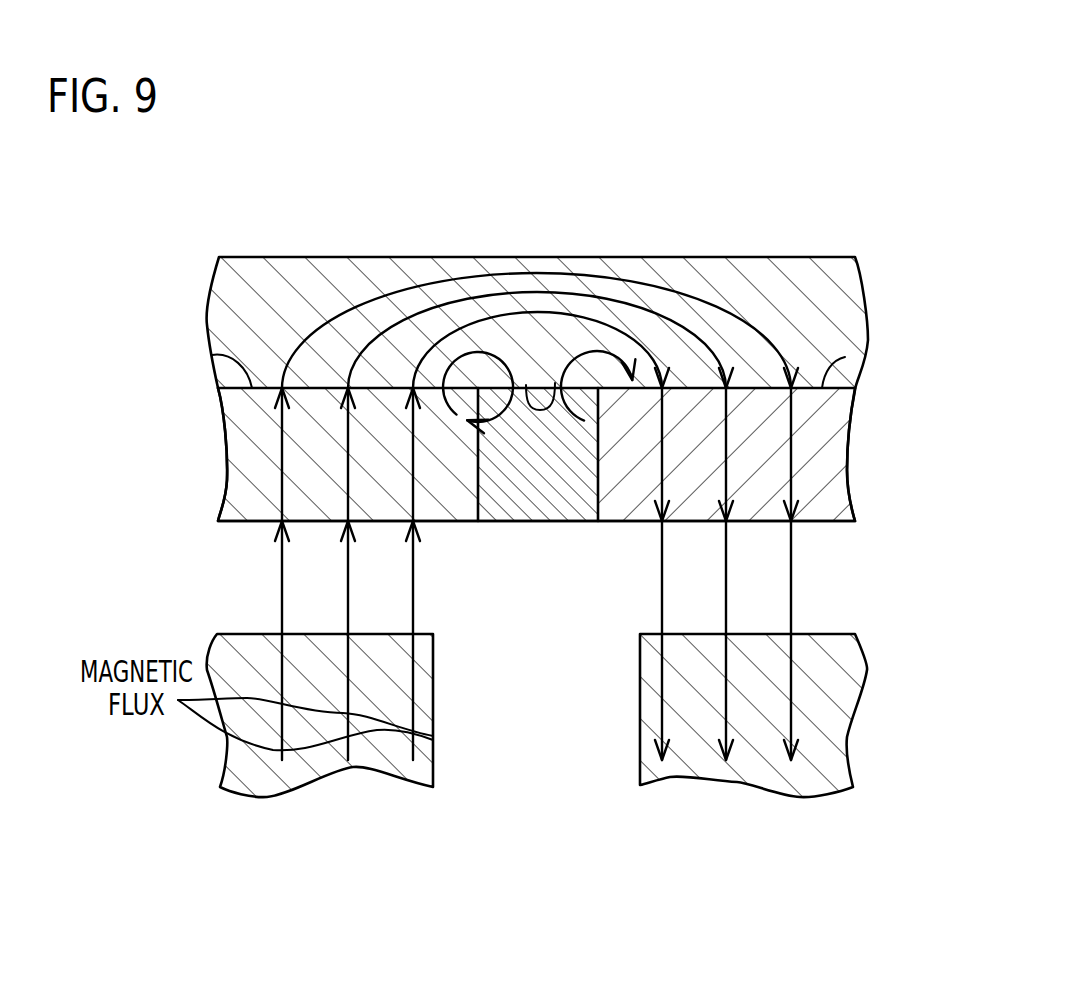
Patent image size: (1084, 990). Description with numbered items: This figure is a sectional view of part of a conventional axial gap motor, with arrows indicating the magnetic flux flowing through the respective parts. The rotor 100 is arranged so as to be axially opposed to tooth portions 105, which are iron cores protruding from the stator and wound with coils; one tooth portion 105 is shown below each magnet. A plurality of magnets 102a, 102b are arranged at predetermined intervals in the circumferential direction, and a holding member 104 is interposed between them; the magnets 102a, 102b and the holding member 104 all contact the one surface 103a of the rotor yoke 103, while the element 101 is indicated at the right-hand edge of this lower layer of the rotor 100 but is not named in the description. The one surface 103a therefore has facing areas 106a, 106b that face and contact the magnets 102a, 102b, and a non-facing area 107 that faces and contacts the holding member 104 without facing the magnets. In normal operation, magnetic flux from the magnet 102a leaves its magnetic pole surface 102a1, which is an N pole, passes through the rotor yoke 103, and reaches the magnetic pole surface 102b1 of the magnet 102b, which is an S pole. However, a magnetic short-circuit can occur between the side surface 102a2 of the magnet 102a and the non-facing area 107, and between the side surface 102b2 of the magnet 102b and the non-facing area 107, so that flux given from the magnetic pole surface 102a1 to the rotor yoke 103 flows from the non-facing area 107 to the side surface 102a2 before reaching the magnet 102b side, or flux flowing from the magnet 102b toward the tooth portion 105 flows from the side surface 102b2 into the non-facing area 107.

The rotor 100 is at (798, 230).
The base member 101 is at (852, 490).
The magnet 102a is at (257, 524).
The magnet 102b is at (820, 525).
The magnetic pole surface 102a1 is at (212, 355).
The magnetic pole surface 102b1 is at (845, 357).
The side surface 102a2 is at (478, 485).
The side surface 102b2 is at (597, 485).
The rotor yoke 103 is at (305, 287).
The one surface 103a is at (230, 392).
The holding member 104 is at (530, 485).
The tooth portion 105 is at (327, 773).
The facing area 106a is at (265, 390).
The facing area 106b is at (835, 388).
The non-facing area 107 is at (555, 383).